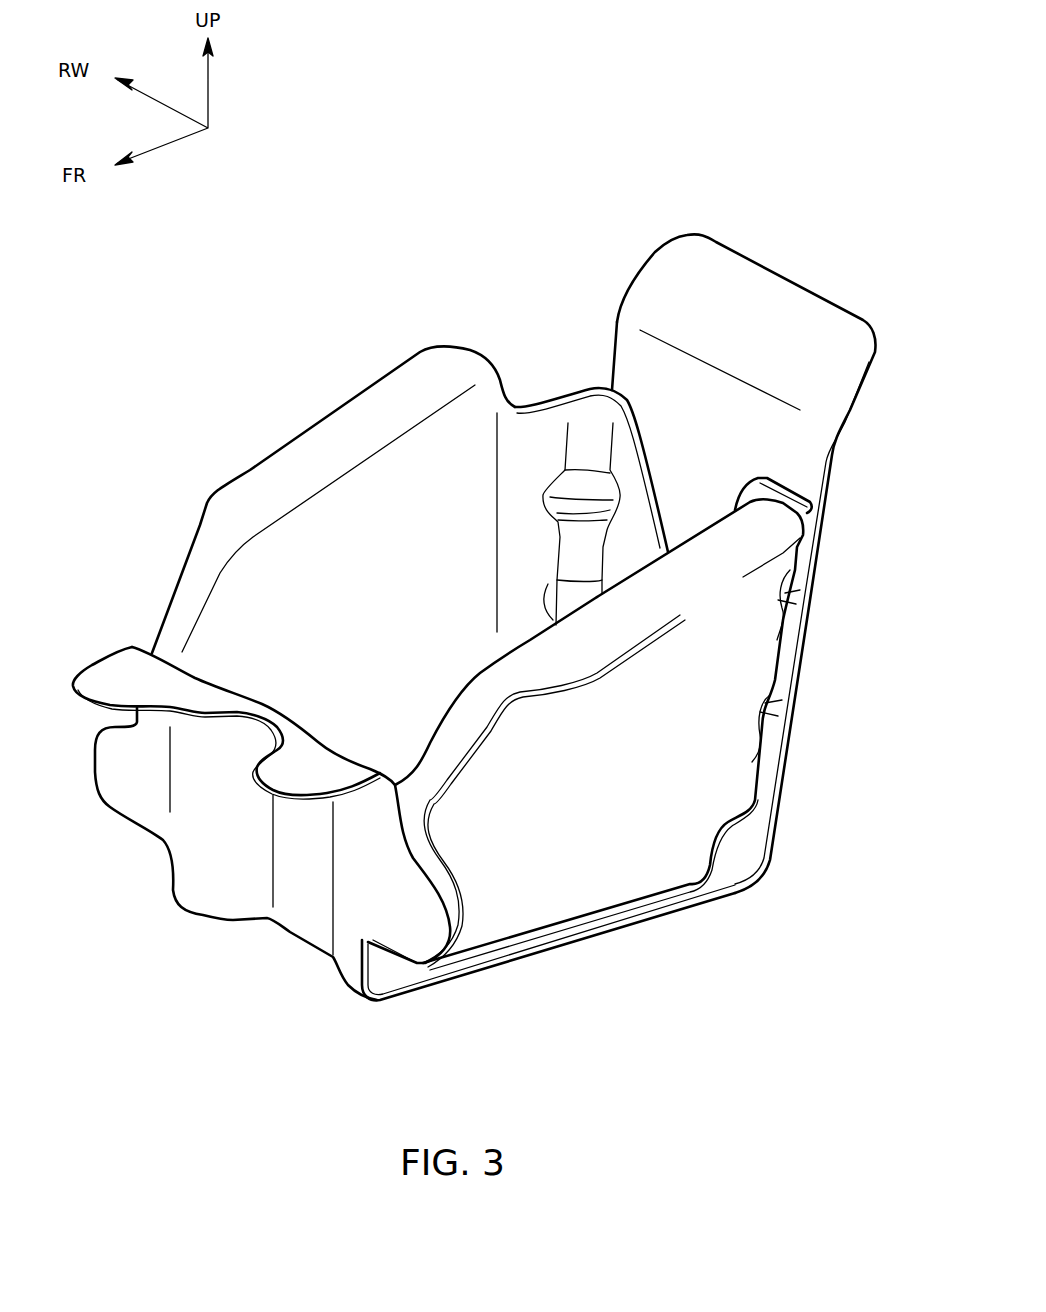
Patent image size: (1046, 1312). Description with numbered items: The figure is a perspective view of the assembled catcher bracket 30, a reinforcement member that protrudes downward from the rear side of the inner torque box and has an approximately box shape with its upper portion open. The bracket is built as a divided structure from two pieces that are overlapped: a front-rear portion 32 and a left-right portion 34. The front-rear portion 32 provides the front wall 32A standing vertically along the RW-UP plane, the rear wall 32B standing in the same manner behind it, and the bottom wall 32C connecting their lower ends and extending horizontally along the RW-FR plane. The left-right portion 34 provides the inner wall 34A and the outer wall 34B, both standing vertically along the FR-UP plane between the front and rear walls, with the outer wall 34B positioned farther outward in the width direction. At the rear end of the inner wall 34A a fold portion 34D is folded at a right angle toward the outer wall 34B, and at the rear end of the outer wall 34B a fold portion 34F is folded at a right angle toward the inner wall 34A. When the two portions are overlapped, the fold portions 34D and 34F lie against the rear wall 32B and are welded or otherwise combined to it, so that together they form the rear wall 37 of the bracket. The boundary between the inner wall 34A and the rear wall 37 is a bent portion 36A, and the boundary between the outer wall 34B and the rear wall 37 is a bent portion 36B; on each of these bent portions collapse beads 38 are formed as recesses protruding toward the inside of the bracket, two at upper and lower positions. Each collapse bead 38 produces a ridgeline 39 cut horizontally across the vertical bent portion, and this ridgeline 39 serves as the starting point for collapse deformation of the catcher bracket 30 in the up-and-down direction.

The catcher bracket 30 is at (45, 456).
The front-rear portion 32 is at (102, 652).
The front wall 32A is at (217, 870).
The rear wall 32B is at (638, 365).
The bottom wall 32C is at (480, 955).
The left-right portion 34 is at (283, 448).
The inner wall 34A is at (592, 855).
The outer wall 34B is at (430, 453).
The fold portion 34D is at (774, 495).
The fold portion 34F is at (637, 533).
The bent portion 36A is at (808, 492).
The bent portion 36B is at (590, 375).
The rear wall 37 is at (740, 167).
The collapse bead 38 is at (553, 492).
The ridgeline 39 is at (553, 505).